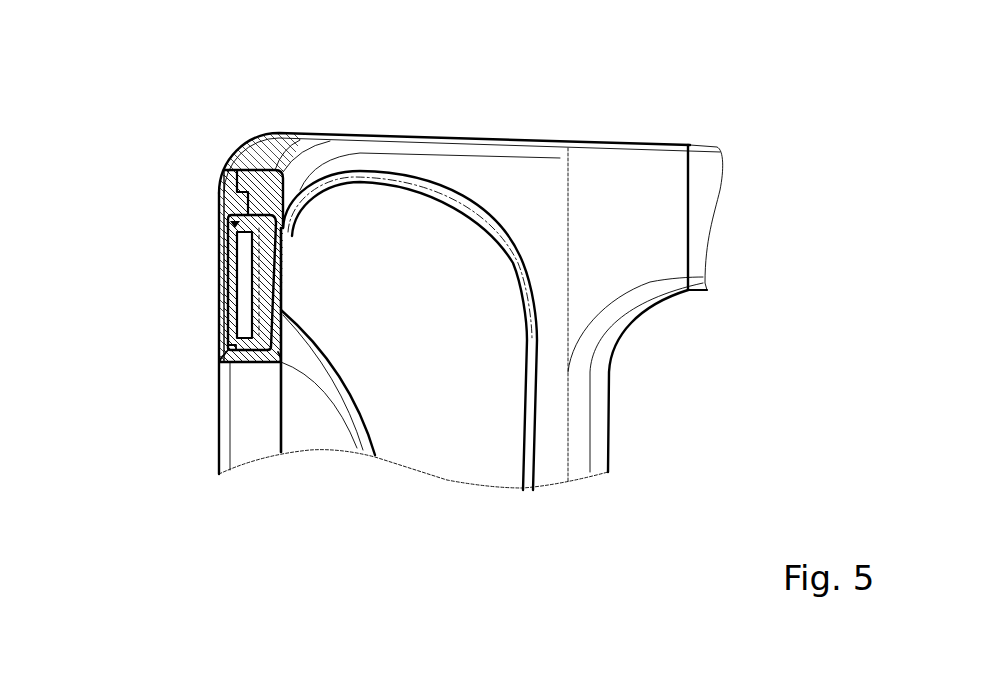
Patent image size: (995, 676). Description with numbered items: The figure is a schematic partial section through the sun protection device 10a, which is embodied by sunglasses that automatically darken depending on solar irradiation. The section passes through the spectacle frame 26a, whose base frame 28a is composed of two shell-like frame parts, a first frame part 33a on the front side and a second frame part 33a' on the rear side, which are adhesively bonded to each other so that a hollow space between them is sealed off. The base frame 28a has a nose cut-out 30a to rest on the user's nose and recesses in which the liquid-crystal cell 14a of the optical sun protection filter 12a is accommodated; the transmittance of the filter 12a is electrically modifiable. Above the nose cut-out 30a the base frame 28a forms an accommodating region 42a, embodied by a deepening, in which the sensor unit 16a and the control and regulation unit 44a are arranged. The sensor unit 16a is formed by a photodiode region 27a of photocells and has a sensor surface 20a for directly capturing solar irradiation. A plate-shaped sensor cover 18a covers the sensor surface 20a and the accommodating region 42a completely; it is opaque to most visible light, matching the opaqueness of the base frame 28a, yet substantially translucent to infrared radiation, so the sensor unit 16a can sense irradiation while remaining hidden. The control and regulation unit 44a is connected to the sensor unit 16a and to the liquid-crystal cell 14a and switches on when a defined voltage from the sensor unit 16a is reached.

The sun protection device 10a is at (668, 126).
The optical sun protection filter 12a is at (498, 489).
The liquid-crystal cell 14a is at (430, 418).
The sensor unit 16a is at (226, 175).
The sensor cover 18a is at (224, 254).
The sensor surface 20a is at (230, 266).
The spectacle frame 26a is at (401, 126).
The photodiode region 27a is at (232, 312).
The base frame 28a is at (495, 180).
The nose cut-out 30a is at (318, 458).
The first frame part 33a is at (189, 303).
The second frame part 33a' is at (417, 128).
The accommodating region 42a is at (222, 350).
The control and regulation unit 44a is at (261, 178).